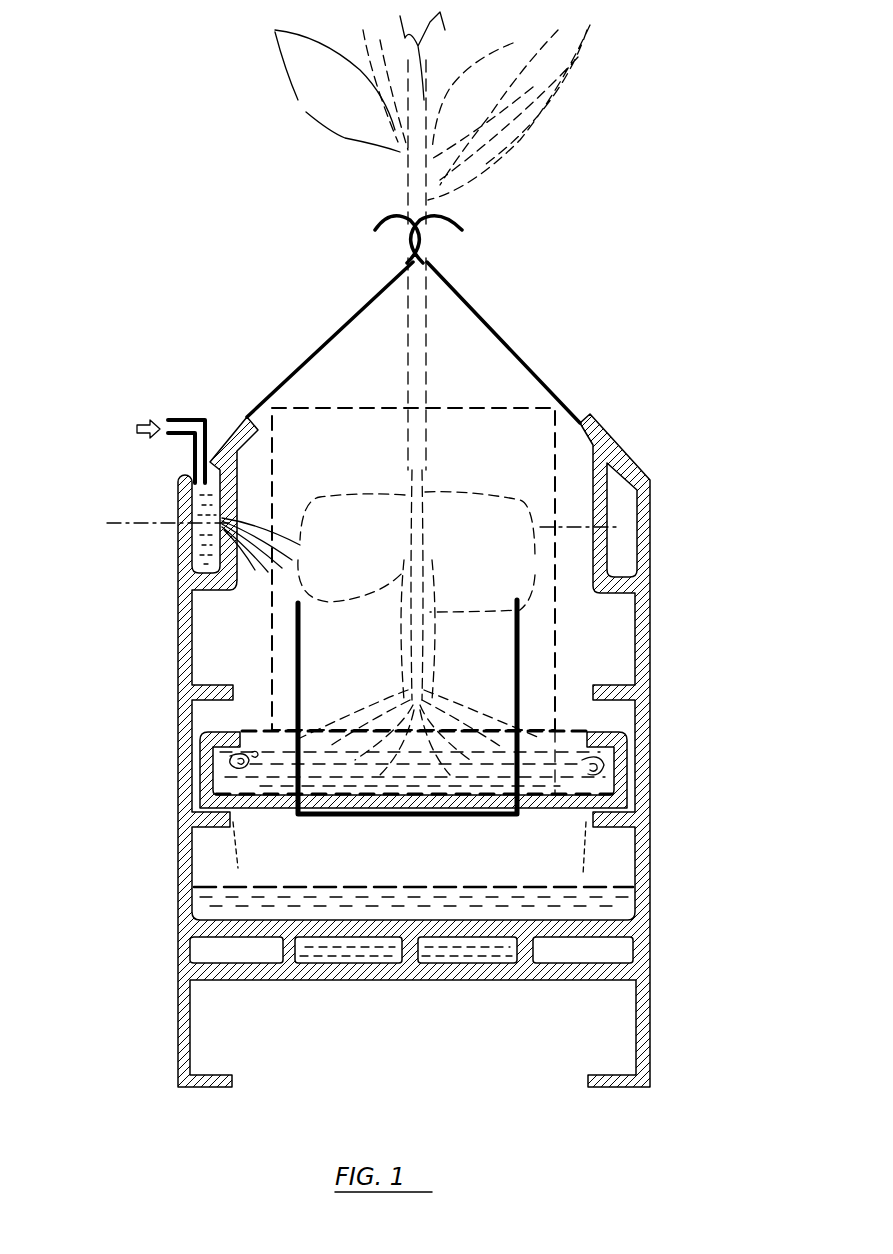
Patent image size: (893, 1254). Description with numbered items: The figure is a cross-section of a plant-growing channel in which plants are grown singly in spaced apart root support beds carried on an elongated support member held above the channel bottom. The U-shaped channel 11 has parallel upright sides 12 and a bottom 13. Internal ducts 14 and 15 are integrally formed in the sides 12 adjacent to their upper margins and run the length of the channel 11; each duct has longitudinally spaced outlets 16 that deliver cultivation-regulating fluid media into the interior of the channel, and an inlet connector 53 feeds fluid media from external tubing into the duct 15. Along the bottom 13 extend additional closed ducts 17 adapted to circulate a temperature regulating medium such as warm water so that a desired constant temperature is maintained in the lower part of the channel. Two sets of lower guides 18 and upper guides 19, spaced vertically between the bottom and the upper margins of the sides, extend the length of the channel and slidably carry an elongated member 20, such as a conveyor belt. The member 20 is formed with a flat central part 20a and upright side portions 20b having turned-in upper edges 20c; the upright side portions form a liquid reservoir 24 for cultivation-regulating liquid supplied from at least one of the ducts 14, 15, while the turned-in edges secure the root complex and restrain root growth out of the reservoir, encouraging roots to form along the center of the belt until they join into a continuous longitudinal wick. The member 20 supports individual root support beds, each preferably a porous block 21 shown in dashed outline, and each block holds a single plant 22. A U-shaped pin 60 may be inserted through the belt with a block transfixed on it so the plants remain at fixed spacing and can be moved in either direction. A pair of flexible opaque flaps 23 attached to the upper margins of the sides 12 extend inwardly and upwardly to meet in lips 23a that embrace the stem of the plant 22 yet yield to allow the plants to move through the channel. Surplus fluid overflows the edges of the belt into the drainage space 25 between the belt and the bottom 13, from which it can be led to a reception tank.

The U-shaped channel 11 is at (675, 470).
The upright sides 12 is at (177, 642).
The bottom 13 is at (410, 982).
The internal duct 14 is at (630, 552).
The internal duct 15 is at (193, 502).
The outlets 16 is at (193, 543).
The closed ducts 17 is at (352, 955).
The lower guides 18 is at (207, 813).
The upper guides 19 is at (197, 692).
The elongated member 20 is at (403, 807).
The flat central part 20a is at (546, 810).
The upright side portions 20b is at (203, 778).
The turned-in upper edges 20c is at (207, 733).
The porous block 21 is at (495, 440).
The plant 22 is at (584, 110).
The flexible opaque flaps 23 is at (396, 314).
The lips 23a is at (375, 221).
The liquid reservoir 24 is at (235, 770).
The drainage space 25 is at (340, 855).
The inlet connector 53 is at (190, 418).
The U-shaped pin 60 is at (303, 668).